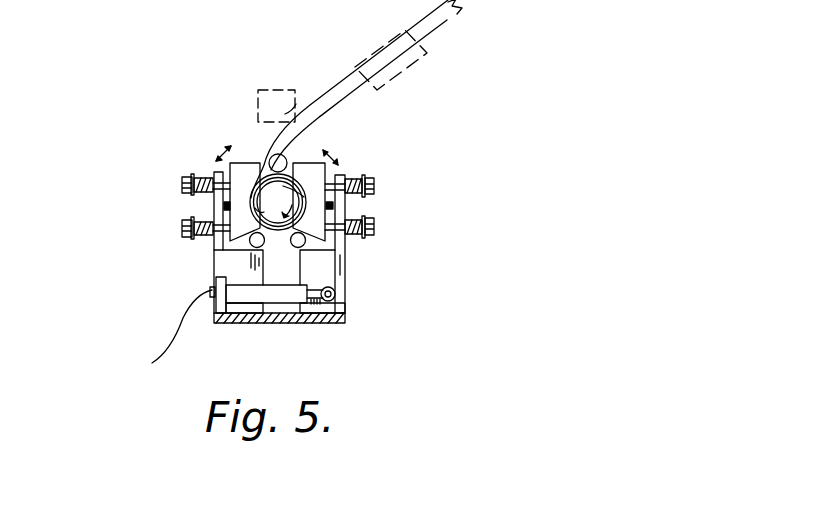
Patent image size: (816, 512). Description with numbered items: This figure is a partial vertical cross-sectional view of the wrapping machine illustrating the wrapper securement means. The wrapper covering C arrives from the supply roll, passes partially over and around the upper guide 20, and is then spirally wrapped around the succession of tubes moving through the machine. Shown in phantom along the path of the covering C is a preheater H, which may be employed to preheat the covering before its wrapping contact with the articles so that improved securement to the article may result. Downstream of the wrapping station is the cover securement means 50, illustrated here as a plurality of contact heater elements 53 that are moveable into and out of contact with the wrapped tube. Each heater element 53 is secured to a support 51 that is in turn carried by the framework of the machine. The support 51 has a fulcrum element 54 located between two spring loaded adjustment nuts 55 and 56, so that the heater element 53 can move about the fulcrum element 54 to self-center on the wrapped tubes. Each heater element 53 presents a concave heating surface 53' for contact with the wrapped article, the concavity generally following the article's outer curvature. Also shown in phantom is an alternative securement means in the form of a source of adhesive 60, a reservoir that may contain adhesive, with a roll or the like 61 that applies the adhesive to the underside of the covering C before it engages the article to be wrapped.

The upper guide 20 is at (283, 153).
The cover securement means 50 is at (104, 213).
The support 51 is at (215, 263).
The contact heater element 53 is at (296, 183).
The concave heating surface 53' is at (253, 201).
The fulcrum element 54 is at (224, 206).
The spring loaded adjustment nut 55 is at (181, 185).
The spring loaded adjustment nut 56 is at (181, 230).
The source of adhesive 60 is at (275, 90).
The roll 61 is at (296, 111).
The wrapper covering C is at (449, 20).
The preheater H is at (413, 63).